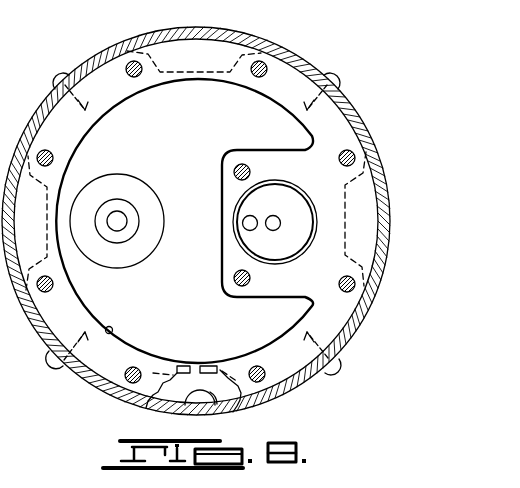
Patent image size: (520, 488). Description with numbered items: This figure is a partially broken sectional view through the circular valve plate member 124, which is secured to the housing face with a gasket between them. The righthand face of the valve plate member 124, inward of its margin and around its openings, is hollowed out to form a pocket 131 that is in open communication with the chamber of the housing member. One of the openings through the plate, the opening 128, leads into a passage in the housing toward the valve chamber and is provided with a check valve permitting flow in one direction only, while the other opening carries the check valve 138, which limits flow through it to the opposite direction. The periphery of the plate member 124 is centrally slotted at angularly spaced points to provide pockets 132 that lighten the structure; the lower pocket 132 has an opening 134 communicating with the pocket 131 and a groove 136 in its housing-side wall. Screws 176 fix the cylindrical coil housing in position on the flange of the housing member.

The valve plate member 124 is at (286, 74).
The opening 128 is at (262, 253).
The pocket 131 is at (107, 332).
The pockets 132 is at (256, 50).
The opening 134 is at (198, 366).
The groove 136 is at (214, 410).
The check valve 138 is at (121, 262).
The screws 176 is at (57, 74).